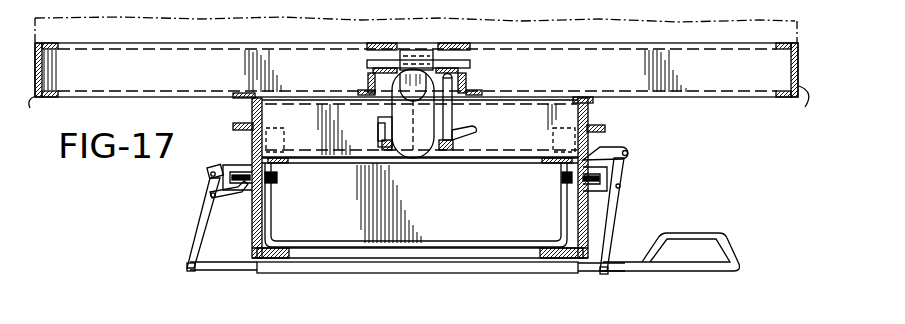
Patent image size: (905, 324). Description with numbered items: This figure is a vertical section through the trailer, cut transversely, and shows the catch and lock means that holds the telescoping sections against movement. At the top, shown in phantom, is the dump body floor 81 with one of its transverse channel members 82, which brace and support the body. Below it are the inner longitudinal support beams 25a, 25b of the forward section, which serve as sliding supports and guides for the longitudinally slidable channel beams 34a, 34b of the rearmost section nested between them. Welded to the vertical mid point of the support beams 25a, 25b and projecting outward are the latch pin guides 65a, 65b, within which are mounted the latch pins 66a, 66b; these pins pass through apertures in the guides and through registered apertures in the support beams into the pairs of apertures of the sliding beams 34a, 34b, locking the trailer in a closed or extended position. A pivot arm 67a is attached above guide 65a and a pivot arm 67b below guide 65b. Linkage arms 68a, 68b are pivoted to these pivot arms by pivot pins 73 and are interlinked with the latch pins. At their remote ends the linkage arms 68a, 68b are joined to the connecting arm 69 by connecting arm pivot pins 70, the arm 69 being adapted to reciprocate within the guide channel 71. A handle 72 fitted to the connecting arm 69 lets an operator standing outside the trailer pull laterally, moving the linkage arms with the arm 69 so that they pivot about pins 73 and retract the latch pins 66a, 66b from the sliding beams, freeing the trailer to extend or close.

The inner longitudinal support beam 25a is at (583, 233).
The inner longitudinal support beam 25b is at (265, 227).
The longitudinally slidable channel beam 34a is at (565, 202).
The longitudinally slidable channel beam 34b is at (268, 200).
The latch pin guide 65a is at (600, 189).
The latch pin guide 65b is at (245, 166).
The latch pin 66a is at (560, 178).
The latch pin 66b is at (278, 178).
The pivot arm 67a is at (588, 155).
The pivot arm 67b is at (236, 199).
The linkage arm 68a is at (615, 212).
The linkage arm 68b is at (198, 233).
The connecting arm 69 is at (241, 274).
The connecting arm pivot pin 70 is at (193, 273).
The guide channel 71 is at (398, 275).
The handle 72 is at (730, 236).
The pivot pin 73 is at (208, 176).
The body floor 81 is at (419, 106).
The transverse channel member 82 is at (612, 80).